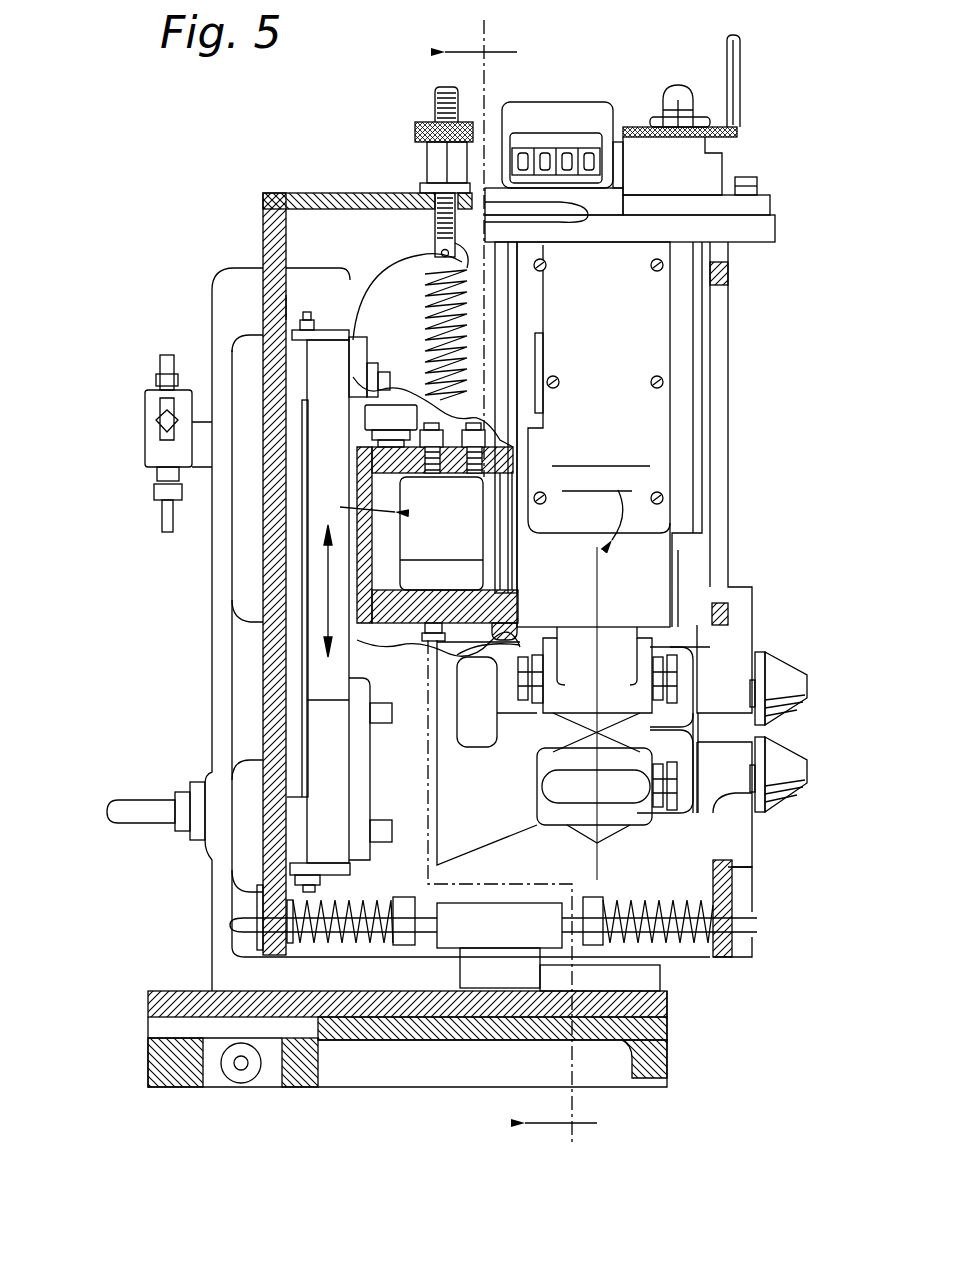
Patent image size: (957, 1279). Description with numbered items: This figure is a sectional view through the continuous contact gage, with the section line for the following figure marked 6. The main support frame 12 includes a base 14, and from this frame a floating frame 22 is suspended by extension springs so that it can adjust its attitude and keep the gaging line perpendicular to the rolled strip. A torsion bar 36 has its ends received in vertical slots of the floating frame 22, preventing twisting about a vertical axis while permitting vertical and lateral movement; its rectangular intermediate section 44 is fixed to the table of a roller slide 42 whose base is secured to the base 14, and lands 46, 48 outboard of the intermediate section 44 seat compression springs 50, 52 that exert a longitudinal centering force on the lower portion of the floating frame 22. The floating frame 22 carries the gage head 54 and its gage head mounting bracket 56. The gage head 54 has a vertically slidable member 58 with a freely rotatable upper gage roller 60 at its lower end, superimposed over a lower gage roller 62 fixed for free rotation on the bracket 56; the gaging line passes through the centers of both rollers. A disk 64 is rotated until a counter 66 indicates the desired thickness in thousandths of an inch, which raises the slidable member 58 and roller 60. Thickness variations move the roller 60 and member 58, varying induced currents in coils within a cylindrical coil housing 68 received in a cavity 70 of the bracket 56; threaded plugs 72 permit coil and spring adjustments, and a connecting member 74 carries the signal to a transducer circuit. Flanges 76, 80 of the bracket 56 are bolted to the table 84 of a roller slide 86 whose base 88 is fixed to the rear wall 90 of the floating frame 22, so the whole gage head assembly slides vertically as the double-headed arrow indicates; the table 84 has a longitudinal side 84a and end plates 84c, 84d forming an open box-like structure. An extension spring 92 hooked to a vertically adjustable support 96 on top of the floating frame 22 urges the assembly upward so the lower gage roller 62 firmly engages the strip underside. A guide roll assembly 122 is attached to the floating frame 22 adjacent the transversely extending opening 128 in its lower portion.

The section line 6- 6 is at (497, 581).
The main support frame 12 is at (212, 720).
The base 14 is at (645, 1003).
The floating frame 22 is at (263, 660).
The torsion bar 36 is at (752, 900).
The roller slide 42 is at (510, 988).
The intermediate section 44 is at (510, 940).
The land 46 is at (596, 900).
The land 48 is at (405, 905).
The compression spring 50 is at (695, 900).
The compression spring 52 is at (360, 935).
The gage head 54 is at (612, 374).
The gage head mounting bracket 56 is at (480, 824).
The vertically slidable member 58 is at (613, 640).
The upper gage roller 60 is at (600, 720).
The lower gage roller 62 is at (578, 760).
The disk 64 is at (742, 120).
The counter 66 is at (560, 145).
The cylindrical coil housing 68 is at (441, 564).
The cavity 70 is at (388, 492).
The threaded plugs 72 is at (478, 470).
The connecting member 74 is at (378, 413).
The flange 76 is at (358, 802).
The flange 80 is at (356, 345).
The table 84 is at (330, 750).
The longitudinal side 84a is at (328, 677).
The end plate 84c is at (342, 330).
The end plate 84d is at (330, 852).
The roller slide 86 is at (372, 508).
The base 88 is at (297, 724).
The rear wall 90 is at (272, 287).
The extension spring 92 is at (425, 292).
The vertically adjustable support 96 is at (435, 157).
The guide roll assembly 122 is at (784, 660).
The transversely extending opening 128 is at (778, 792).